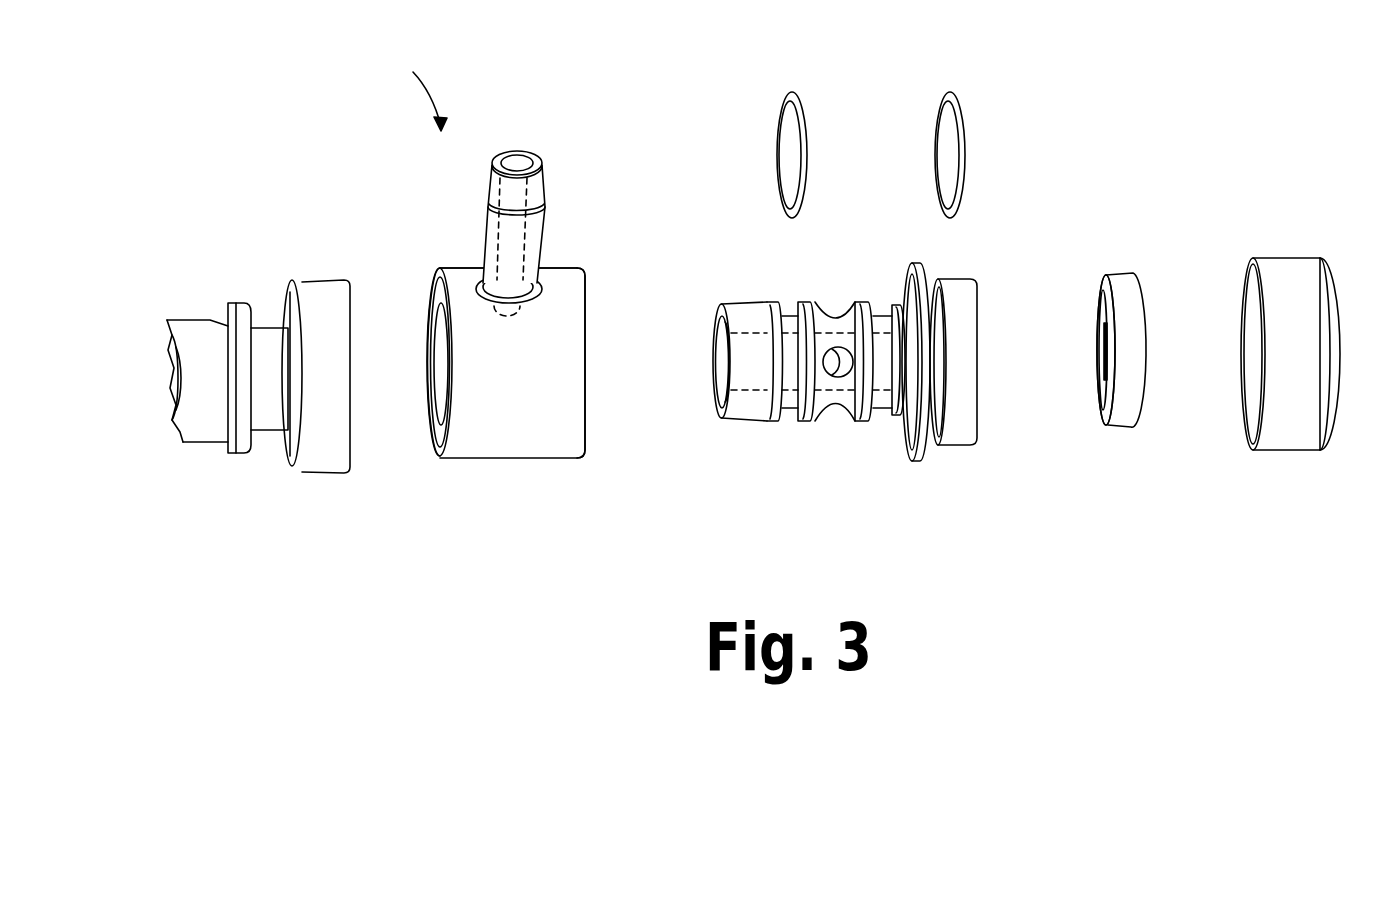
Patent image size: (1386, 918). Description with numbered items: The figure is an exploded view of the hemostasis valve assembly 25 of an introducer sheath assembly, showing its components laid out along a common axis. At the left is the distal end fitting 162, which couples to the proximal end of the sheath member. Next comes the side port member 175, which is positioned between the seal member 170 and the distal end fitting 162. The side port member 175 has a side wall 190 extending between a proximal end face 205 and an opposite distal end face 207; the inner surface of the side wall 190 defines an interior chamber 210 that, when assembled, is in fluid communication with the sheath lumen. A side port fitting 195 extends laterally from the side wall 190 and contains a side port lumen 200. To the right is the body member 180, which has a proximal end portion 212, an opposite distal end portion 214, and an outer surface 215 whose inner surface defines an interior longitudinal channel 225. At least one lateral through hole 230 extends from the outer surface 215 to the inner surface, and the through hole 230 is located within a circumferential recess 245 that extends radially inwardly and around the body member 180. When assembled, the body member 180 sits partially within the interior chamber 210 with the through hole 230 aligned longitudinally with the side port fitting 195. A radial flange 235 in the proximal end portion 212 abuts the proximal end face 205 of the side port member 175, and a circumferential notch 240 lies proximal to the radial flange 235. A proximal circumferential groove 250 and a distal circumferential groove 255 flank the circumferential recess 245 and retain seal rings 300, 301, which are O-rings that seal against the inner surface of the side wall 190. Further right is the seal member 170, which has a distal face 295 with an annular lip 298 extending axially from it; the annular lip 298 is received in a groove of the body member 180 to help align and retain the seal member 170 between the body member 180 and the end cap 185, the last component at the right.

The hemostasis valve assembly 25 is at (414, 88).
The distal end fitting 162 is at (212, 443).
The seal member 170 is at (1117, 430).
The side port member 175 is at (505, 460).
The body member 180 is at (765, 423).
The end cap 185 is at (1265, 452).
The side wall 190 is at (573, 455).
The side port fitting 195 is at (552, 190).
The side port lumen 200 is at (516, 160).
The proximal end face 205 is at (592, 297).
The distal end face 207 is at (428, 458).
The interior chamber 210 is at (437, 357).
The proximal end portion 212 is at (947, 445).
The distal end portion 214 is at (745, 422).
The outer surface 215 is at (862, 423).
The interior longitudinal channel 225 is at (714, 394).
The lateral through hole 230 is at (838, 352).
The radial flange 235 is at (917, 462).
The circumferential notch 240 is at (935, 285).
The circumferential recess 245 is at (836, 413).
The proximal circumferential groove 250 is at (883, 302).
The distal circumferential groove 255 is at (795, 300).
The distal face 295 is at (1102, 373).
The annular lip 298 is at (1100, 282).
The seal ring 300 is at (960, 112).
The seal ring 301 is at (803, 110).